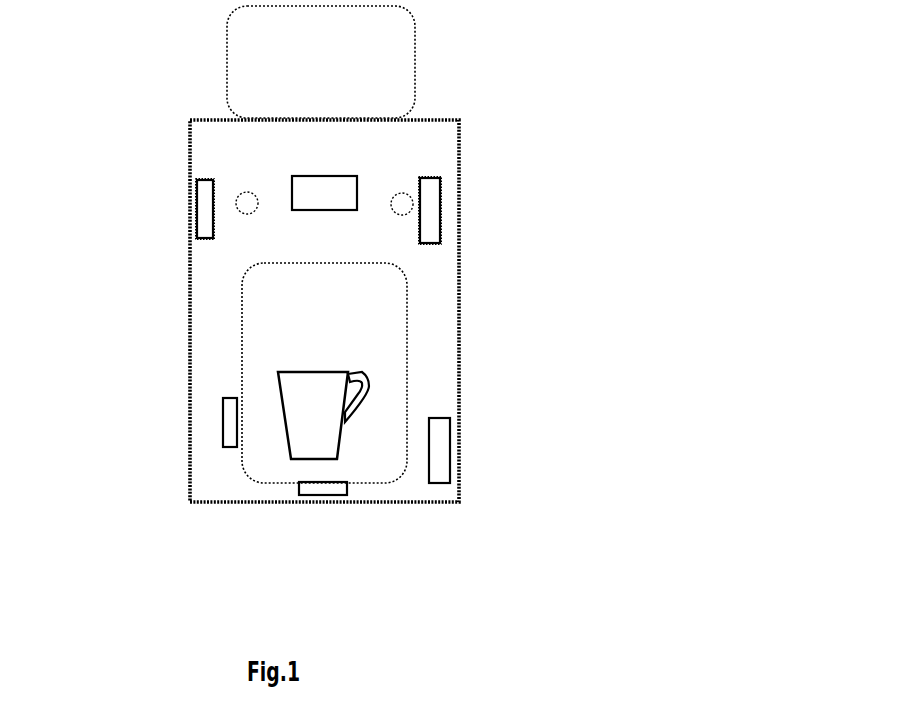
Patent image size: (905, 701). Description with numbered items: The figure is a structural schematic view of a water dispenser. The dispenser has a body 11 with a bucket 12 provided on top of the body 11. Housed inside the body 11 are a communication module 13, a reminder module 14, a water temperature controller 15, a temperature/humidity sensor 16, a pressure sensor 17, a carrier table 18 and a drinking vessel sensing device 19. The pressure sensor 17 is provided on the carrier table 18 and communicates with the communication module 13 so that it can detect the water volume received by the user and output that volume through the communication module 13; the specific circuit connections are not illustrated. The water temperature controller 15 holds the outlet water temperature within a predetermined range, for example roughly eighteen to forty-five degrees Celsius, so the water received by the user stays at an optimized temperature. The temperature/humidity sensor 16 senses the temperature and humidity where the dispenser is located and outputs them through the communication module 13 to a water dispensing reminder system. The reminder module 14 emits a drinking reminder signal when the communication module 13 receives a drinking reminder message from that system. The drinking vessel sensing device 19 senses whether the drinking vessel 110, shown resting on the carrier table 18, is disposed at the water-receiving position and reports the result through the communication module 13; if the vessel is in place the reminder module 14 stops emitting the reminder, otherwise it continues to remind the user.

The body 11 is at (189, 143).
The bucket 12 is at (227, 59).
The communication module 13 is at (196, 205).
The reminder module 14 is at (356, 176).
The water temperature controller 15 is at (441, 207).
The temperature/humidity sensor 16 is at (451, 448).
The pressure sensor 17 is at (347, 483).
The carrier table 18 is at (292, 482).
The drinking vessel sensing device 19 is at (223, 422).
The drinking vessel 110 is at (278, 373).